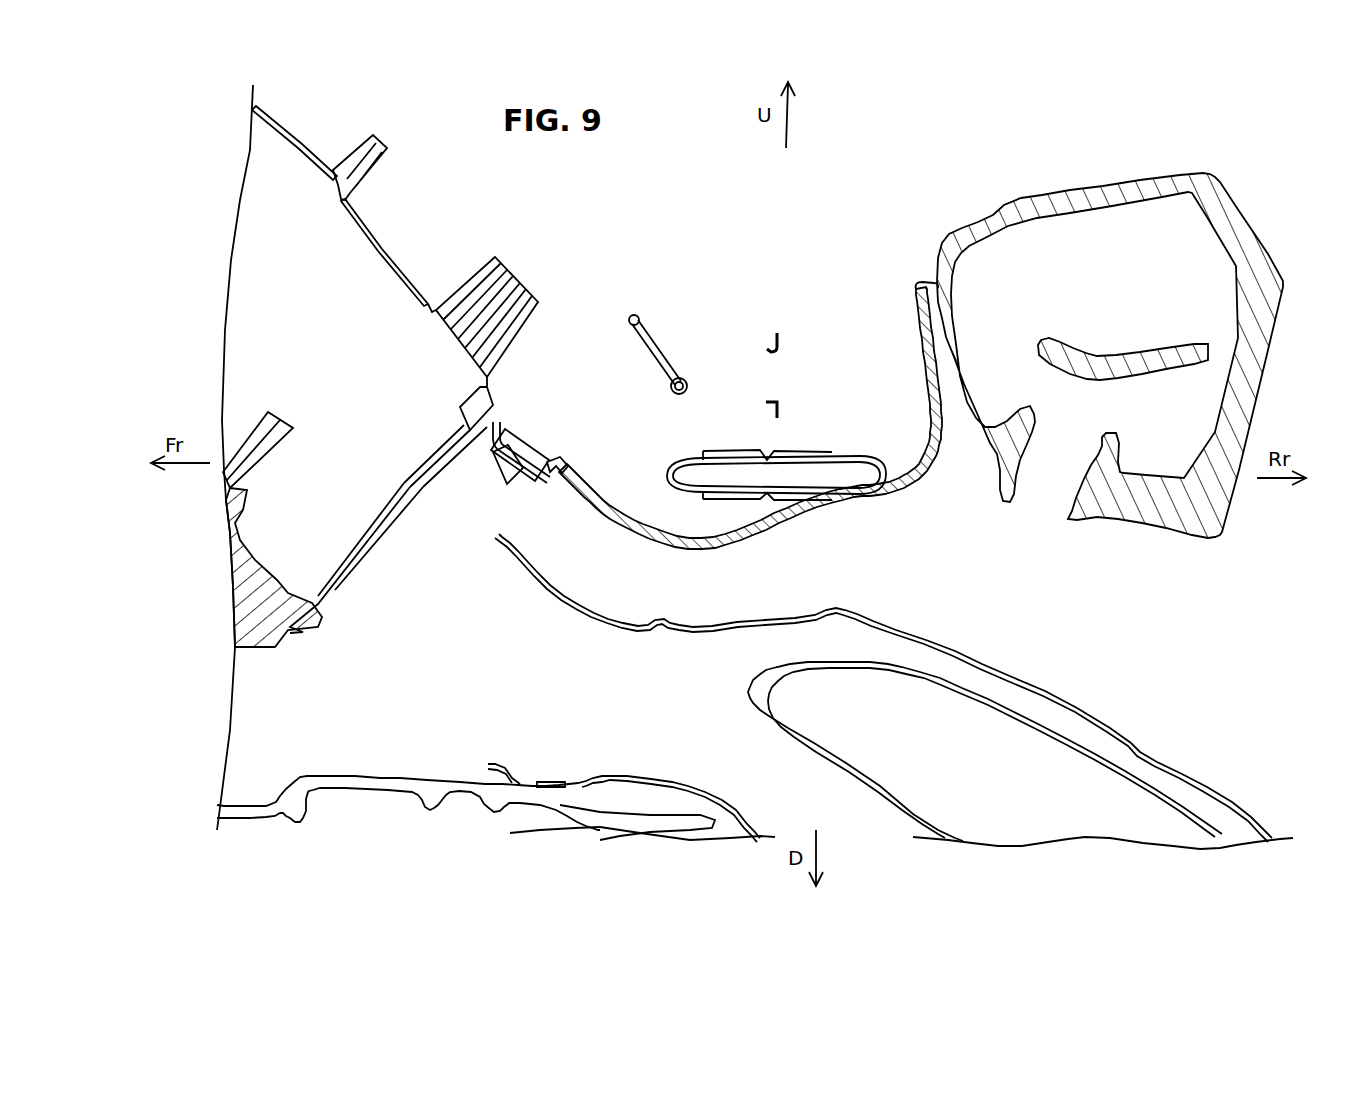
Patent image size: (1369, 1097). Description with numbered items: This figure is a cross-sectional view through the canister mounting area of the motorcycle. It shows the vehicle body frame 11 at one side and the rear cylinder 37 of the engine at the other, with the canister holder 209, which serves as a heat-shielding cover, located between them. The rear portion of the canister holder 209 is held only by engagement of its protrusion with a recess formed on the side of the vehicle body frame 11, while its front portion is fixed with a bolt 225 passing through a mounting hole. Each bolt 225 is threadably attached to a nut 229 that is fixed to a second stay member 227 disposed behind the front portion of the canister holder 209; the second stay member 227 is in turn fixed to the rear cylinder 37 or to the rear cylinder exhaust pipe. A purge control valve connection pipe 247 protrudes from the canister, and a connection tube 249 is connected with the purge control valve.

The vehicle body frame 11 is at (1113, 183).
The rear cylinder 37 is at (290, 130).
The canister holder 209 is at (930, 482).
The bolt 225 is at (543, 450).
The second stay member 227 is at (497, 424).
The nut 229 is at (497, 453).
The purge control valve connection pipe 247 is at (690, 458).
The connection tube 249 is at (846, 456).